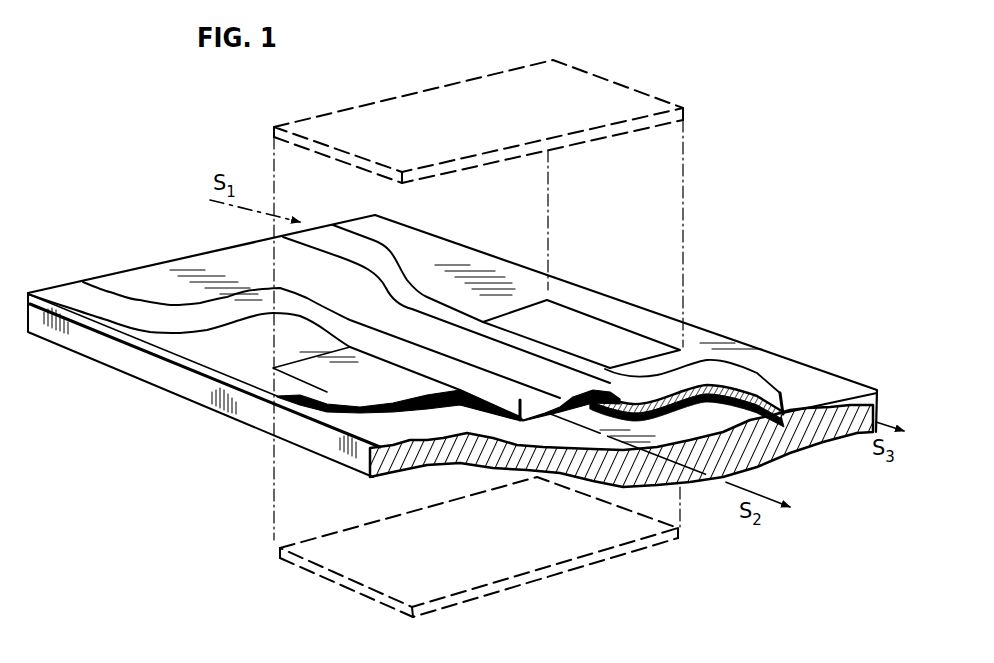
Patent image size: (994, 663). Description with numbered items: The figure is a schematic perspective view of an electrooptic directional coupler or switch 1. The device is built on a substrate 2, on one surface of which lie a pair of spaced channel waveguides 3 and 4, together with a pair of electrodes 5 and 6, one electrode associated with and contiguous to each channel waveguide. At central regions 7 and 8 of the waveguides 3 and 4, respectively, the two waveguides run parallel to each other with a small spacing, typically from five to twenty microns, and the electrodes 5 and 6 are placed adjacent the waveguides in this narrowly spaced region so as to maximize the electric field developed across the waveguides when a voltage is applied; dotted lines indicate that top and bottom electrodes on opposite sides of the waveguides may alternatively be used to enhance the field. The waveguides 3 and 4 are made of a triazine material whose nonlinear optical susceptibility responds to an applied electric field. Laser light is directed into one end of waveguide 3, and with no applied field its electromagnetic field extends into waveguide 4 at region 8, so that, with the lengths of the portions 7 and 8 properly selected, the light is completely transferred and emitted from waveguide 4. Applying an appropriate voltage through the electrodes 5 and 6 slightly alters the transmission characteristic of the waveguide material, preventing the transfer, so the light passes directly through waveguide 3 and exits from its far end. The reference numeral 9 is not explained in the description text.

The electrooptic directional coupler or switch 1 is at (700, 308).
The substrate 2 is at (137, 367).
The channel waveguide 3 is at (780, 382).
The channel waveguide 4 is at (93, 286).
The electrode 5 is at (598, 326).
The electrode 6 is at (365, 393).
The central region 7 is at (447, 317).
The central region 8 is at (330, 323).
The insulating layer 9 is at (163, 268).